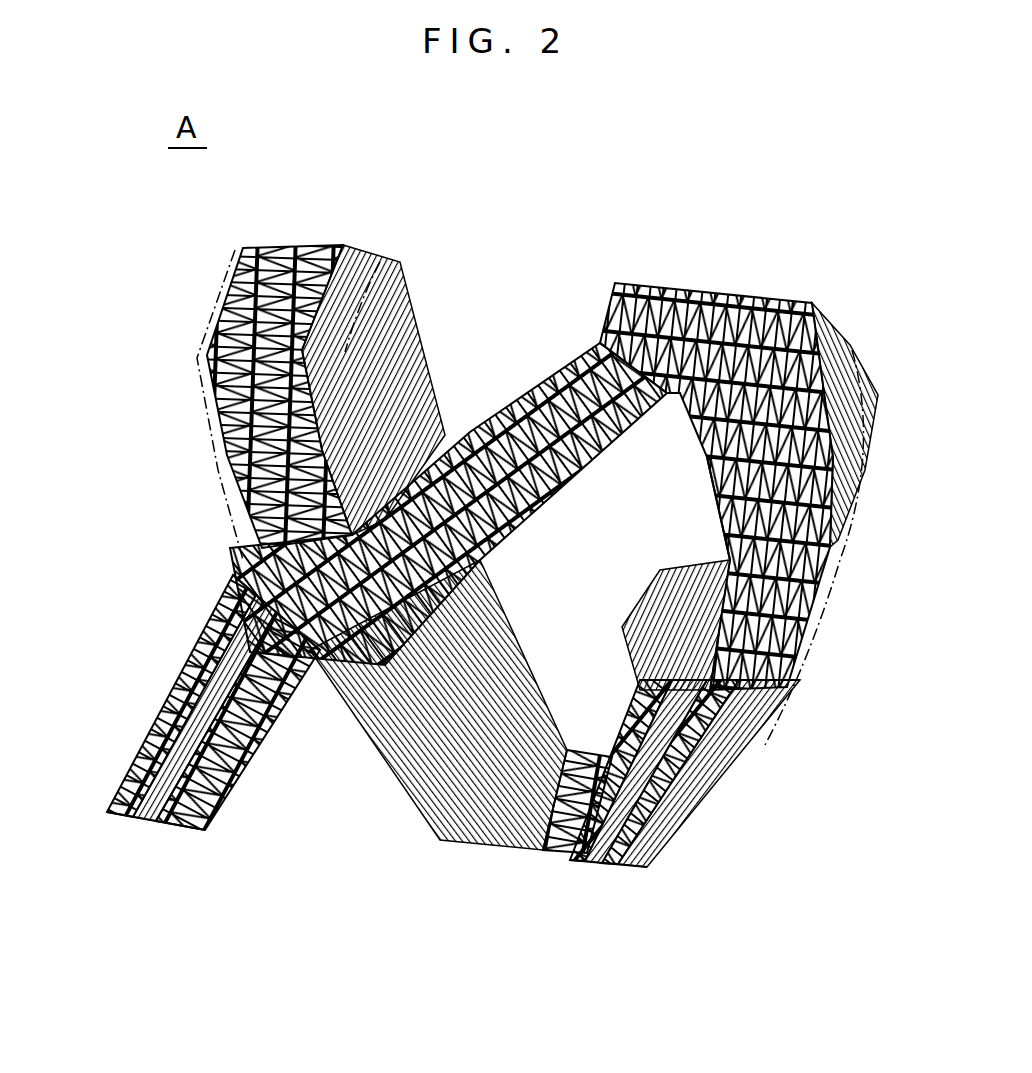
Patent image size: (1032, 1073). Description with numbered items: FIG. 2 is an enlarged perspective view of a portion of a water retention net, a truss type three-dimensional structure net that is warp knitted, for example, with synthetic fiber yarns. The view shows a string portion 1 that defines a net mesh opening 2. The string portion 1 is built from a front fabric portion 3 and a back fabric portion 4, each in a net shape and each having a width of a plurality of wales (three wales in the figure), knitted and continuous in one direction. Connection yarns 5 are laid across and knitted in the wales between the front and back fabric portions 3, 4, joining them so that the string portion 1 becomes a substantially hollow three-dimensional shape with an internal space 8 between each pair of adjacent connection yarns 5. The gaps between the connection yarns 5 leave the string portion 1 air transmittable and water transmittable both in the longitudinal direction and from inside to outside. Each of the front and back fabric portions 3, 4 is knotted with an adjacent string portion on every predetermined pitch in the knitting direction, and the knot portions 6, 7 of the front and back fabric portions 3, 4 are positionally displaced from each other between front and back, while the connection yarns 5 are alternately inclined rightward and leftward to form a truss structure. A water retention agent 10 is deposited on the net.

The string portion 1 is at (405, 790).
The net mesh opening 2 is at (657, 482).
The front fabric portion 3 is at (222, 427).
The back fabric portion 4 is at (125, 830).
The connection yarns 5 is at (705, 770).
The knot portion 6 is at (802, 455).
The knot portion 7 is at (450, 428).
The internal space 8 is at (172, 832).
The water retention agent 10 is at (197, 358).